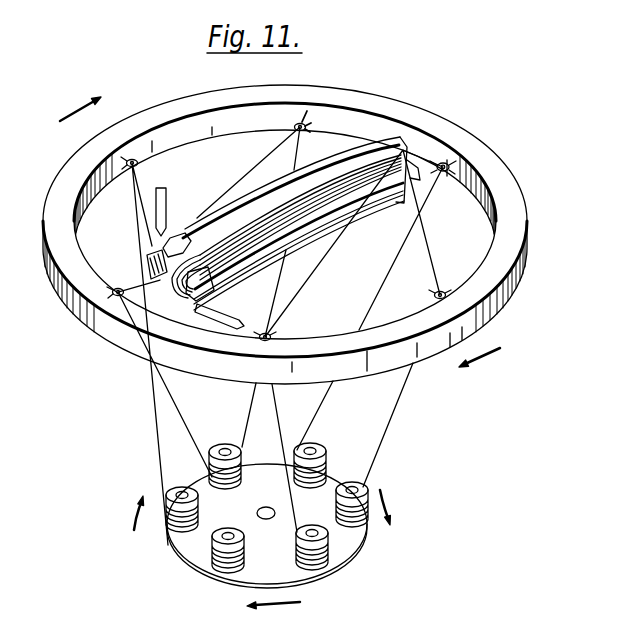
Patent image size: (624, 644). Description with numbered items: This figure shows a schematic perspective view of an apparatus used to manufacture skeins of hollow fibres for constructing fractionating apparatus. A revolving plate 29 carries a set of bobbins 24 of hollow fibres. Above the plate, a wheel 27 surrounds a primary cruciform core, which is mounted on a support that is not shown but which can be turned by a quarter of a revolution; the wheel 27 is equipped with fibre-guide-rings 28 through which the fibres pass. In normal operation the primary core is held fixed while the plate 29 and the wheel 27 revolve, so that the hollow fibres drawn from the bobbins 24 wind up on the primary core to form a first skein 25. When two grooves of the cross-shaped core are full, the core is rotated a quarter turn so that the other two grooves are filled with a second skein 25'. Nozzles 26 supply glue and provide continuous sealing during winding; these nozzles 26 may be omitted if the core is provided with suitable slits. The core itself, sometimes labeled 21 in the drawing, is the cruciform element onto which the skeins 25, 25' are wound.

The suspended rail / cross beam 21 is at (282, 230).
The bobbins 24 is at (348, 482).
The first skein 25 is at (281, 231).
The second skein 25' is at (155, 319).
The nozzles 26 is at (167, 203).
The wheel 27 is at (518, 226).
The fibre-guide-rings 28 is at (462, 168).
The revolving plate 29 is at (252, 571).